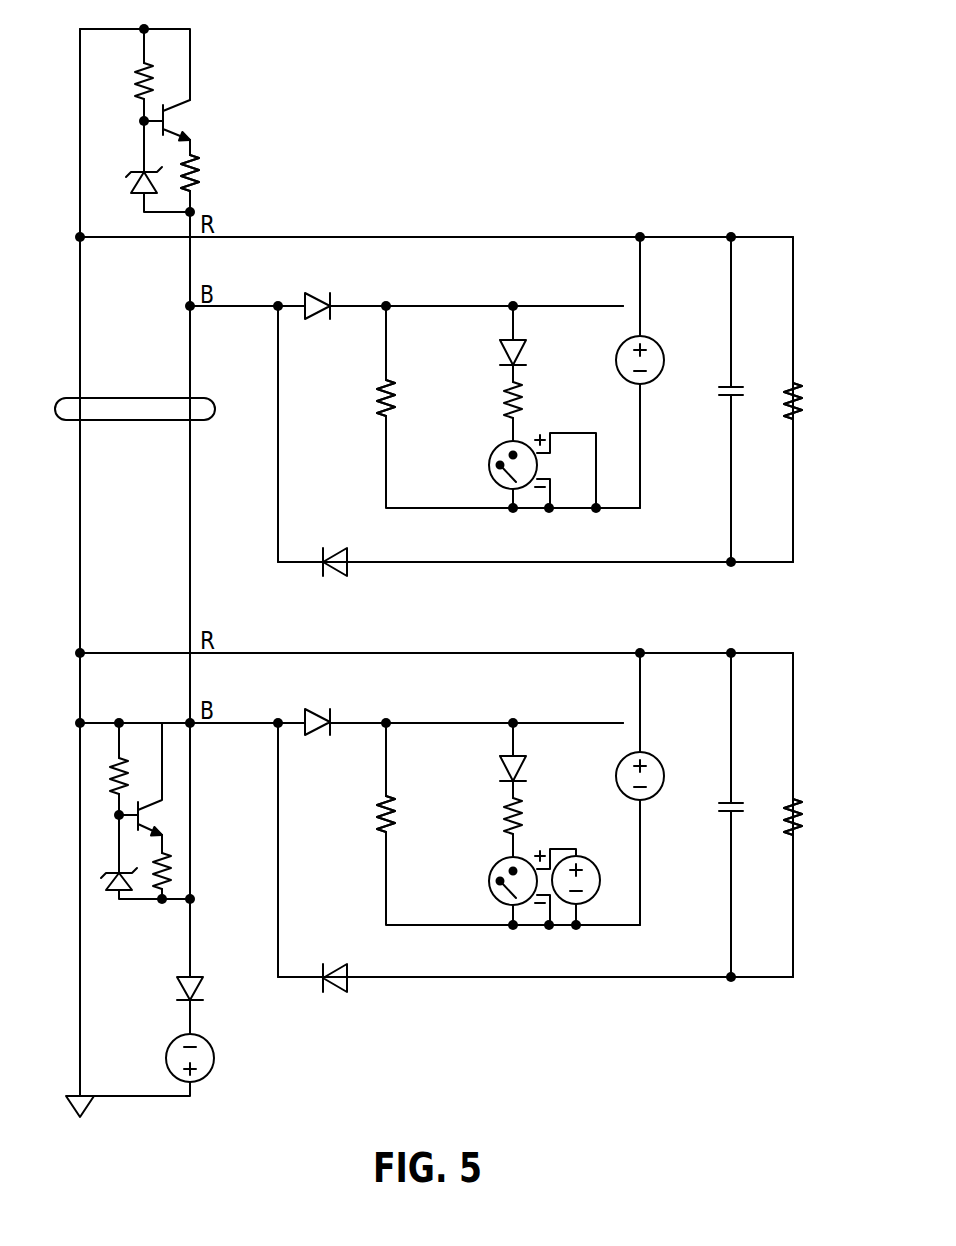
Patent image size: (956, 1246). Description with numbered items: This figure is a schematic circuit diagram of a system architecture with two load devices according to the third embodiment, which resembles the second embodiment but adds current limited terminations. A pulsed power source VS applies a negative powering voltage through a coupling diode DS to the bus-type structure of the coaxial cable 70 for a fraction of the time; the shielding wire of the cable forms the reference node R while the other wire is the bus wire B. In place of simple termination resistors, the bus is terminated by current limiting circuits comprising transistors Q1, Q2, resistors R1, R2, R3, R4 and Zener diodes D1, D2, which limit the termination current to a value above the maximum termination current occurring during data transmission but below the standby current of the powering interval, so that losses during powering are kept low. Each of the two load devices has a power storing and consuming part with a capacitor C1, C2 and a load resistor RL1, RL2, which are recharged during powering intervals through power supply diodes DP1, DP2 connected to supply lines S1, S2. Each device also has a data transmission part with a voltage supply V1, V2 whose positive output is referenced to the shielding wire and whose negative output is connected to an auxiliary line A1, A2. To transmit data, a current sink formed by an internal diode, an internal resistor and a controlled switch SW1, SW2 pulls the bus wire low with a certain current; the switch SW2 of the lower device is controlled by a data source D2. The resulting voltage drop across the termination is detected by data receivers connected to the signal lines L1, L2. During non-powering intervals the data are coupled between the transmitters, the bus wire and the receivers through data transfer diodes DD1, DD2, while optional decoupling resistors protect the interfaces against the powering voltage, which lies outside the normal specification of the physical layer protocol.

The resistor R1 is at (156, 75).
The transistor Q1 is at (177, 120).
The Zener diode D1 is at (150, 166).
The resistor R2 is at (175, 176).
The coaxial cable 70 is at (122, 398).
The data transfer diode DD1 is at (316, 294).
The signal line L1 is at (476, 293).
The controlled switch SW1 is at (511, 470).
The voltage supply V1 is at (645, 348).
The auxiliary line A1 is at (640, 423).
The capacitor C1 is at (742, 390).
The load resistor RL1 is at (814, 400).
The power supply diode DP1 is at (332, 546).
The supply line S1 is at (680, 562).
The data transfer diode DD2 is at (316, 710).
The signal line L2 is at (476, 709).
The controlled switch SW2 is at (501, 887).
The voltage supply V2 is at (645, 764).
The auxiliary line A2 is at (640, 839).
The capacitor C2 is at (742, 806).
The load resistor RL2 is at (814, 816).
The power supply diode DP2 is at (332, 962).
The supply line S2 is at (680, 977).
The resistor R3 is at (132, 769).
The transistor Q2 is at (152, 779).
The resistor R4 is at (149, 867).
The Zener diode / data source D2 is at (350, 870).
The coupling diode DS is at (176, 989).
The pulsed power source VS is at (171, 1058).